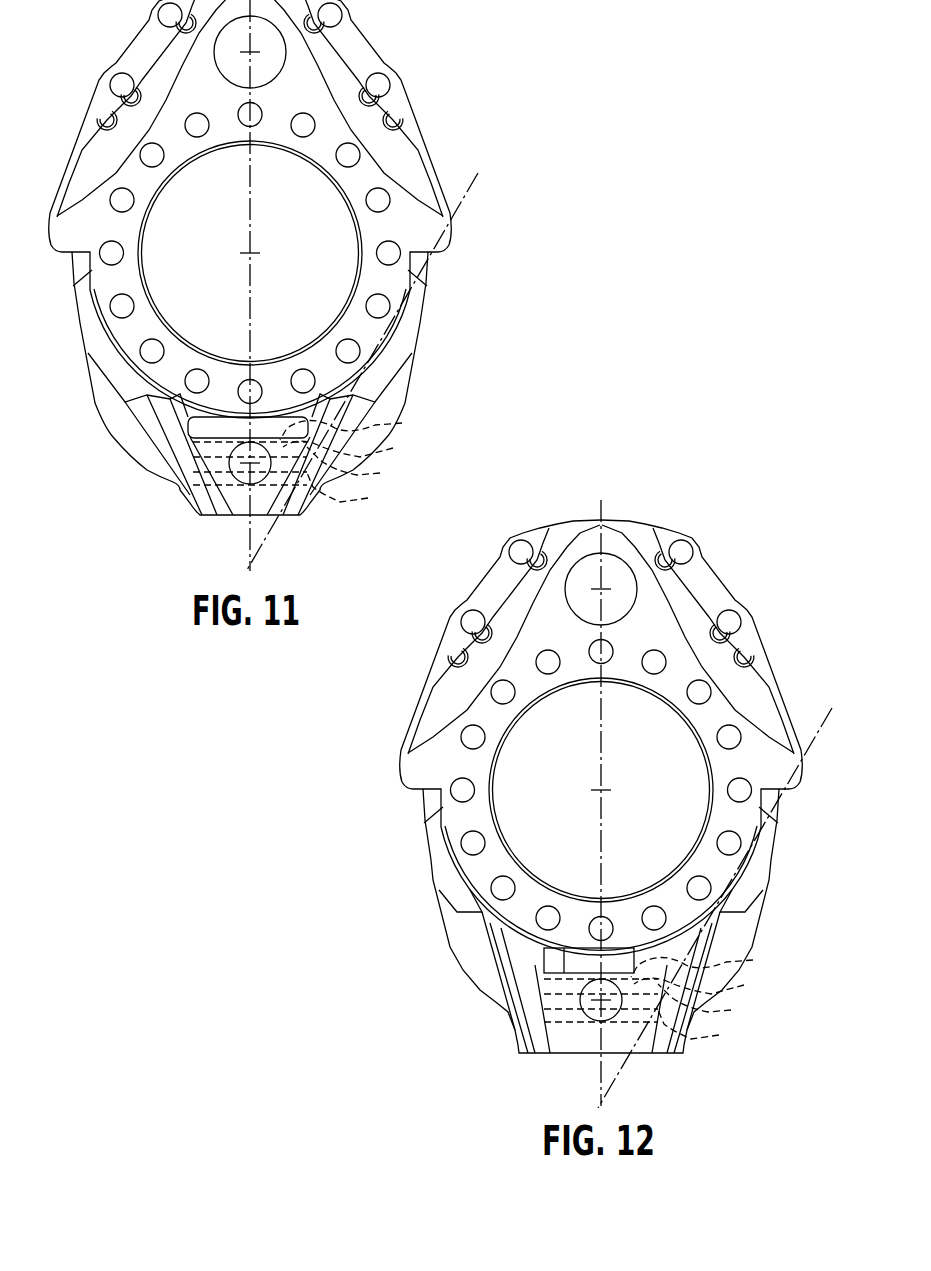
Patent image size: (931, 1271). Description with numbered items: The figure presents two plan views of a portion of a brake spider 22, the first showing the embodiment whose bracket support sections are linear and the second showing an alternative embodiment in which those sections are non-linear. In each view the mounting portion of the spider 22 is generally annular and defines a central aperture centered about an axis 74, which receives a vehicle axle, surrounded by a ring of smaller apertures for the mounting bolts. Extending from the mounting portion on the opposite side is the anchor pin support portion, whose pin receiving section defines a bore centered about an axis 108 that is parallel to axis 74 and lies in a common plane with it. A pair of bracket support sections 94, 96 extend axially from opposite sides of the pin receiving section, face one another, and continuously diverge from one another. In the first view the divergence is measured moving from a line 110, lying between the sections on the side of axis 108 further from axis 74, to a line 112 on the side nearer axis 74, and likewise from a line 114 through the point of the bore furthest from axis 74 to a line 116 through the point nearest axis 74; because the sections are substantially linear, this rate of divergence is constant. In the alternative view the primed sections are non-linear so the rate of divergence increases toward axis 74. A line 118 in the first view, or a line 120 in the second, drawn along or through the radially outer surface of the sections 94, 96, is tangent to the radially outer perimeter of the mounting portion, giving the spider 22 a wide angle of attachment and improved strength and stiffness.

In FIG. 11, the brake spider 22 is at (236, 257).
In FIG. 12, the brake spider 22 is at (601, 747).
In FIG. 11, the axis 74 is at (250, 285).
In FIG. 12, the axis 74 is at (601, 803).
In FIG. 11, the bracket support section 94 is at (170, 458).
In FIG. 12, the bracket support section 94 is at (498, 994).
In FIG. 11, the bracket support section 96 is at (323, 464).
In FIG. 12, the bracket support section 96 is at (702, 995).
In FIG. 11, the axis 108 is at (171, 463).
In FIG. 12, the axis 108 is at (522, 1000).
In FIG. 11, the line 110 is at (360, 466).
In FIG. 12, the line 110 is at (712, 1004).
In FIG. 11, the line 112 is at (354, 449).
In FIG. 12, the line 112 is at (707, 987).
In FIG. 11, the line 114 is at (355, 491).
In FIG. 12, the line 114 is at (709, 1029).
In FIG. 11, the line 116 is at (358, 426).
In FIG. 12, the line 116 is at (709, 963).
In FIG. 11, the line 118 is at (396, 371).
In FIG. 12, the line 120 is at (715, 866).